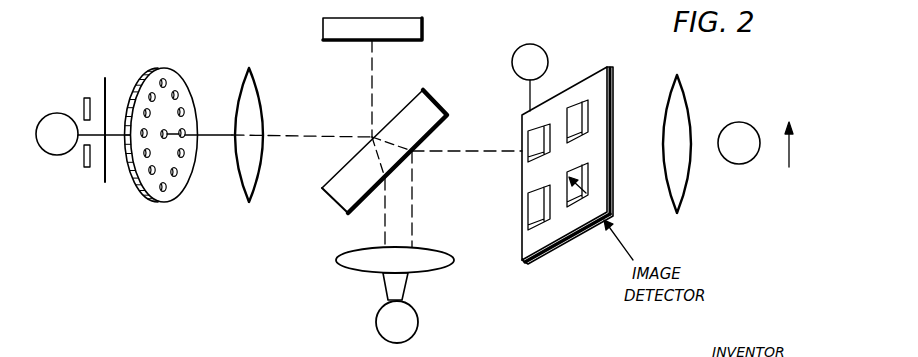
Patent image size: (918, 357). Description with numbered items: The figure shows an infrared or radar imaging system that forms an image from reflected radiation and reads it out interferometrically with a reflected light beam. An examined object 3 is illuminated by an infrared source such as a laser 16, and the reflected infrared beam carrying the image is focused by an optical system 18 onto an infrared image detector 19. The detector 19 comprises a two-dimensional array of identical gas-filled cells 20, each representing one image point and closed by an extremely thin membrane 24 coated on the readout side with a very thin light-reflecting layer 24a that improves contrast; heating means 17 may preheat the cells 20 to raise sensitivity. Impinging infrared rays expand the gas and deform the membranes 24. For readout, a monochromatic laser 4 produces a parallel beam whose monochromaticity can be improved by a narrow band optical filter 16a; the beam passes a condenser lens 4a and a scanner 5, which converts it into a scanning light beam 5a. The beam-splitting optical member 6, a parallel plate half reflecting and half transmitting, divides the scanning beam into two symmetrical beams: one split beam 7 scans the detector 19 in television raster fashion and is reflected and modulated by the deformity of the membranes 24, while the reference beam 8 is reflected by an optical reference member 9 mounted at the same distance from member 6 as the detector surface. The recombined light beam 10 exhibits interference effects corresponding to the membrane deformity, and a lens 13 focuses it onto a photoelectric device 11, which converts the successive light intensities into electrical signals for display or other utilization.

The examined object 3 is at (790, 147).
The laser 4 is at (55, 153).
The condenser lens 4a is at (249, 204).
The scanner 5 is at (164, 201).
The scanning light beam 5a is at (204, 139).
The beam-splitting optical member 6 is at (432, 108).
The split scanning beam 7 is at (413, 198).
The reference beam 8 is at (372, 88).
The optical reference member 9 is at (422, 27).
The recombined light beam 10 is at (410, 289).
The photoelectric device 11 is at (412, 333).
The lens 13 is at (452, 266).
The infrared laser 16 is at (733, 134).
The narrow band optical filter 16a is at (108, 82).
The heating means 17 is at (516, 50).
The optical system 18 is at (681, 204).
The infrared image detector 19 is at (551, 246).
The cell 20 is at (586, 193).
The membrane 24 is at (590, 170).
The light-reflecting layer 24a is at (535, 137).